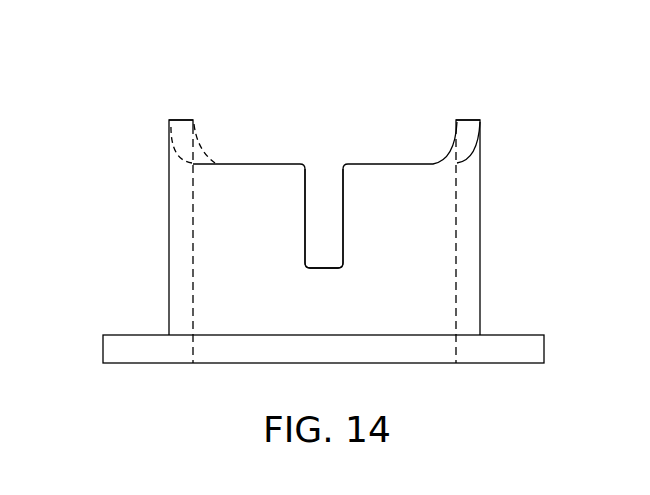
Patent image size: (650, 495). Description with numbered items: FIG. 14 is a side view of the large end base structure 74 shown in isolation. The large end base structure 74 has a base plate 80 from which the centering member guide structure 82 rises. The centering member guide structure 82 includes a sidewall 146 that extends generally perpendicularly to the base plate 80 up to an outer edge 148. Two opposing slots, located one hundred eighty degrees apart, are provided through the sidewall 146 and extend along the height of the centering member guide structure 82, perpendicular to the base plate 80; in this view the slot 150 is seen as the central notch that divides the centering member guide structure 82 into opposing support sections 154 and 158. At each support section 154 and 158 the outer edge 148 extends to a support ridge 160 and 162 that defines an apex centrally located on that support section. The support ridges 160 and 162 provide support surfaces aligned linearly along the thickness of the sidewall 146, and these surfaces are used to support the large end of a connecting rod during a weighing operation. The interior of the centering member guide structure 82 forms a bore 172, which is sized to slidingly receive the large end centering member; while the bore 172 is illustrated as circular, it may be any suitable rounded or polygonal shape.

The large end base structure 74 is at (100, 101).
The centering member guide structure 82 is at (520, 168).
The base plate 80 is at (127, 356).
The sidewall 146 is at (196, 247).
The outer edge 148 is at (200, 149).
The slot 150 is at (310, 277).
The support section 154 is at (146, 187).
The support section 158 is at (512, 243).
The support ridge 160 is at (182, 120).
The support ridge 162 is at (471, 120).
The bore 172 is at (333, 143).